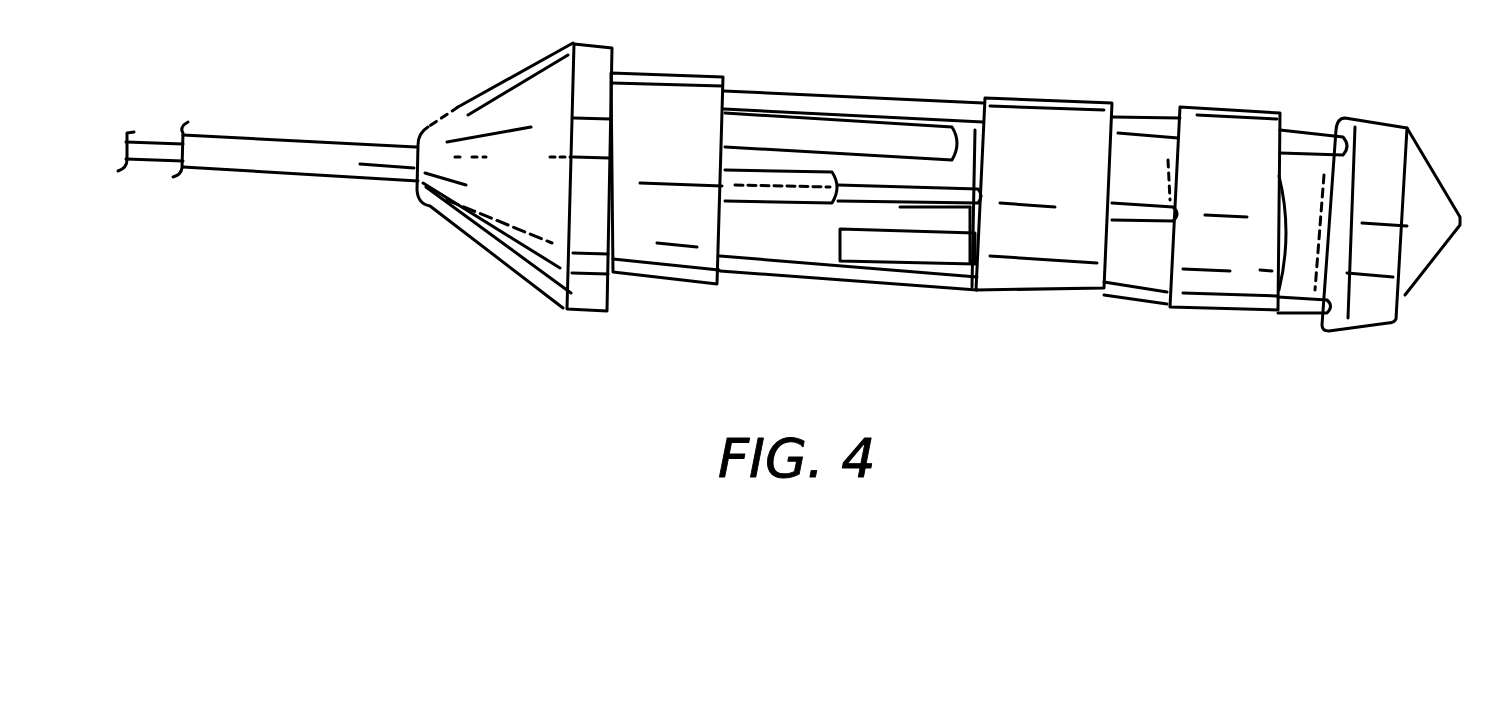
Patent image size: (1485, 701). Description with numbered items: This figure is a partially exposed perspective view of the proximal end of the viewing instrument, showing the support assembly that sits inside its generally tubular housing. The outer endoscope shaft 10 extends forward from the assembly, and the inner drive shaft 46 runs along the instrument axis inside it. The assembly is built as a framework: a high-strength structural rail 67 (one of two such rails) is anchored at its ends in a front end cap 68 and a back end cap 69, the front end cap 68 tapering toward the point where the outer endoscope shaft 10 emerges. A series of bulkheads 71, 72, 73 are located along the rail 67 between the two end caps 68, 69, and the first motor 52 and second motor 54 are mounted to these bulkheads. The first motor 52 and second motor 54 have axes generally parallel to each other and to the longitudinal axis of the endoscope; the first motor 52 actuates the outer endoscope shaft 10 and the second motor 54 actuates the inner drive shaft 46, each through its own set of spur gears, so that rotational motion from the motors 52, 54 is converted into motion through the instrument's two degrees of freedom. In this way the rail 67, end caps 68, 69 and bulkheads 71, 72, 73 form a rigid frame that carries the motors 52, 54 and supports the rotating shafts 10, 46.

The outer endoscope shaft 10 is at (320, 140).
The front end cap 68 is at (517, 97).
The bulkhead 71 is at (647, 278).
The rail 67 is at (788, 273).
The first motor 52 is at (850, 125).
The inner drive shaft 46 is at (900, 195).
The second motor 54 is at (938, 247).
The bulkhead 72 is at (1042, 280).
The bulkhead 73 is at (1213, 290).
The back end cap 69 is at (1408, 290).